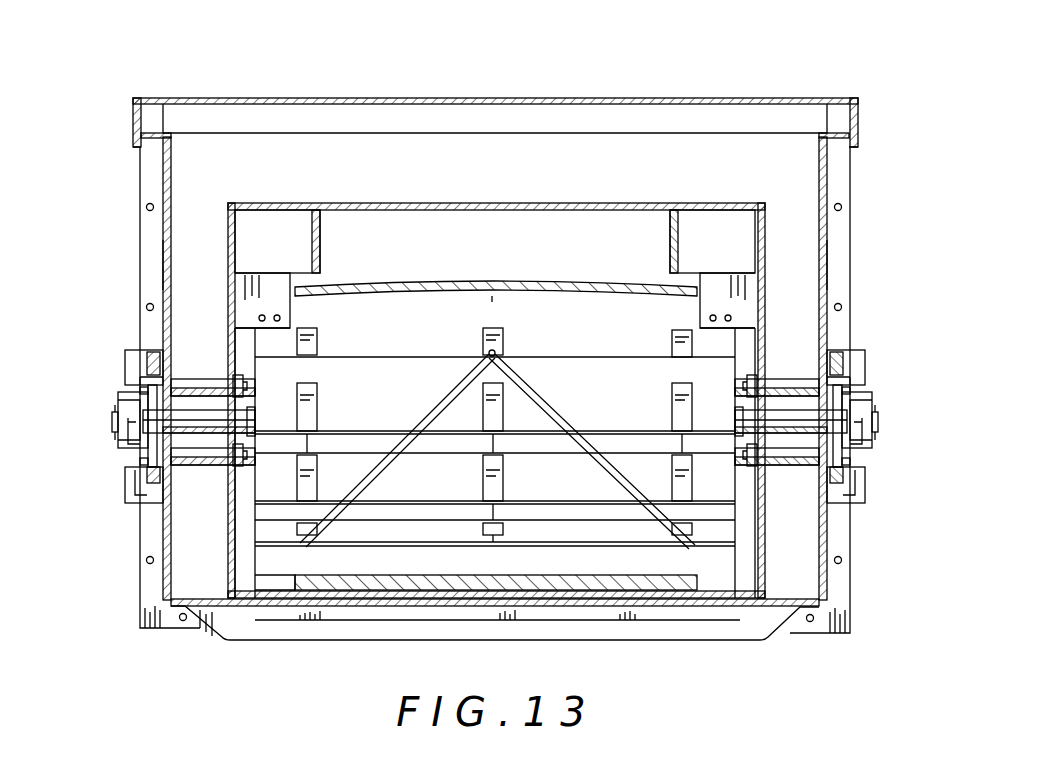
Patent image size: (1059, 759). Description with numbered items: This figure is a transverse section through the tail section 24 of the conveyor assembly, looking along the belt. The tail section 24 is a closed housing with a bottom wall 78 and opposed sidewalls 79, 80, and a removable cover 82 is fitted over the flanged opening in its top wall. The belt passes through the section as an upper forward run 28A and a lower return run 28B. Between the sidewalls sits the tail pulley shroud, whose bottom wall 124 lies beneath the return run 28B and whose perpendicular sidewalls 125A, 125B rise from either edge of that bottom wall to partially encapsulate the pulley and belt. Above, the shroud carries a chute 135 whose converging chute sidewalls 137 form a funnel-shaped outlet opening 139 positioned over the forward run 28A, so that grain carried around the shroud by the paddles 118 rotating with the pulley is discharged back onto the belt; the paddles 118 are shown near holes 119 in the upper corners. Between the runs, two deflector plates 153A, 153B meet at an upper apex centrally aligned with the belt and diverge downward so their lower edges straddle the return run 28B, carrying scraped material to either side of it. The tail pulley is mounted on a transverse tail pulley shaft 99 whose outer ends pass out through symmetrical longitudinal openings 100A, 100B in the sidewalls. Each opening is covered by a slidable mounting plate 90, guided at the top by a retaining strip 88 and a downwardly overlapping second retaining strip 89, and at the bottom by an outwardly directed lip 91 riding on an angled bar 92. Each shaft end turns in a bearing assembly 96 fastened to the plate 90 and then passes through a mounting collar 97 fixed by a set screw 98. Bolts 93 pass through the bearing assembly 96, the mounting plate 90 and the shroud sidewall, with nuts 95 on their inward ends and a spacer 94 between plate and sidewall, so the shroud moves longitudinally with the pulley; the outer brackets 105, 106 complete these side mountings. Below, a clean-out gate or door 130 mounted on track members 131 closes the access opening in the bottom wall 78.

The tail section 24 is at (665, 70).
The removable cover 82 is at (540, 96).
The sidewall 79 is at (172, 163).
The sidewall 80 is at (828, 177).
The bottom wall 78 is at (198, 602).
The track members 131 is at (694, 614).
The gate or door 130 is at (220, 645).
The chute 135 is at (557, 188).
The chute sidewalls 137 is at (306, 206).
The shroud sidewall 125B is at (226, 222).
The shroud sidewall 125A is at (763, 562).
The paddles 118 is at (278, 266).
The fastener holes 119 is at (285, 318).
The outlet opening 139 is at (581, 239).
The forward run 28A is at (424, 282).
The return run 28B is at (340, 588).
The bottom wall 124 is at (260, 585).
The deflector plate 153A is at (437, 404).
The deflector plate 153B is at (555, 407).
The tail pulley shaft 99 is at (243, 402).
The spacer 94 is at (203, 378).
The nuts 95 is at (243, 467).
The longitudinal opening 100A is at (164, 258).
The longitudinal opening 100B is at (826, 273).
The retaining strip 88 is at (152, 350).
The second retaining strip 89 is at (156, 383).
The mounting plate 90 is at (147, 380).
The bolts 93 is at (146, 390).
The bearing assembly 96 is at (143, 402).
The mounting collar 97 is at (114, 418).
The set screw 98 is at (126, 430).
The outwardly directed lip 91 is at (143, 470).
The angled bar 92 is at (147, 487).
The left lower bracket 105 is at (130, 515).
The right lower bracket 106 is at (842, 502).